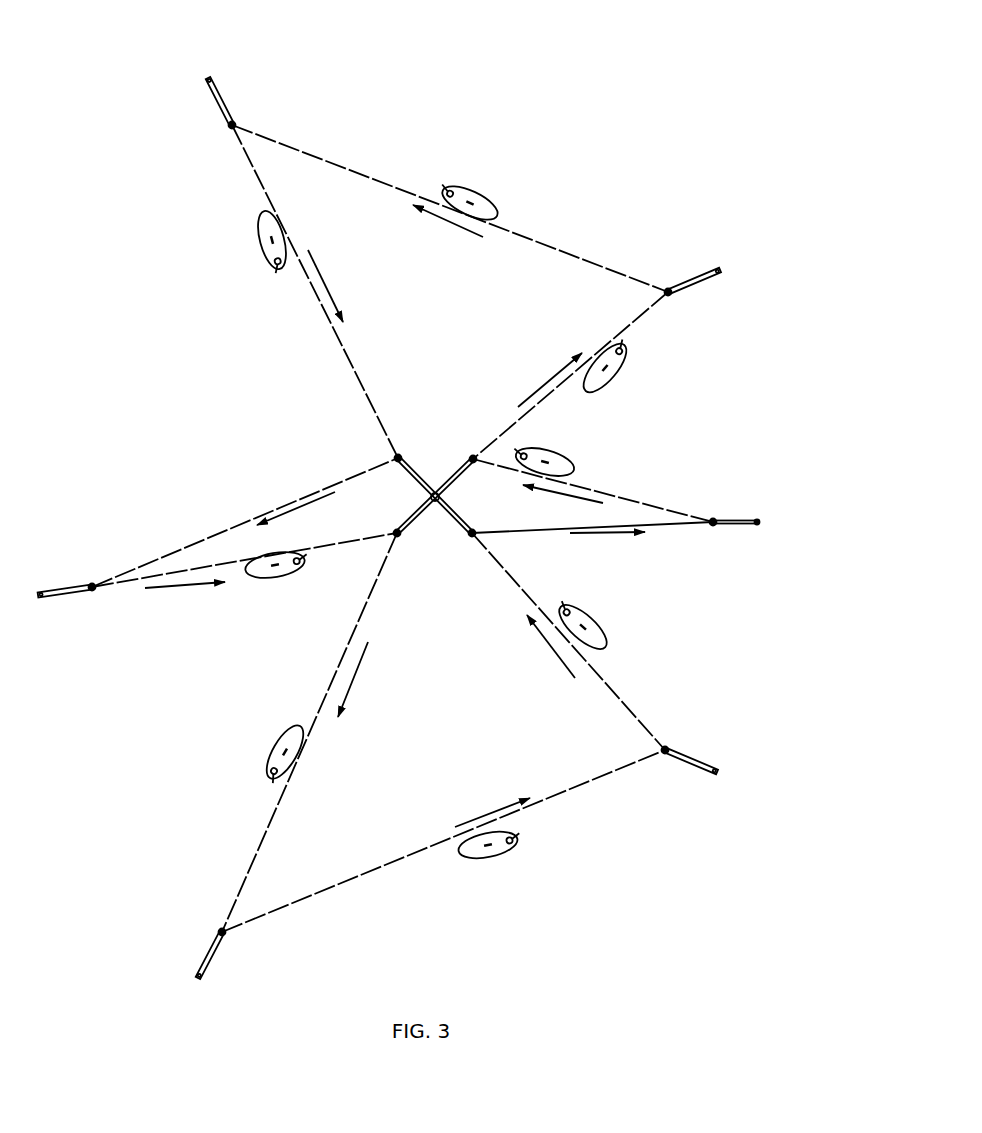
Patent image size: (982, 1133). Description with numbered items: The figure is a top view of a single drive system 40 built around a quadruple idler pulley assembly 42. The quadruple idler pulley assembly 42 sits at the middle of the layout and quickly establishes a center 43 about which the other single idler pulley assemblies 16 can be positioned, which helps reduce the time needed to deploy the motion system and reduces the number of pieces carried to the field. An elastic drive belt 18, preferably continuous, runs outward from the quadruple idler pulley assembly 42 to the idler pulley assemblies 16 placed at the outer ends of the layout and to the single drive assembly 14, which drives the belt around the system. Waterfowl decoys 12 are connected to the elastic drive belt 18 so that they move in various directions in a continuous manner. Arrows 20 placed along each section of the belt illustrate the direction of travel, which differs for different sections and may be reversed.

The single drive system 40 is at (580, 115).
The quadruple idler pulley assembly 42 is at (415, 518).
The center 43 is at (435, 482).
The elastic drive belt 18 is at (375, 410).
The idler pulley assemblies 16 is at (225, 98).
The single drive assembly 14 is at (757, 522).
The waterfowl decoys 12 is at (478, 190).
The arrows 20 is at (425, 207).